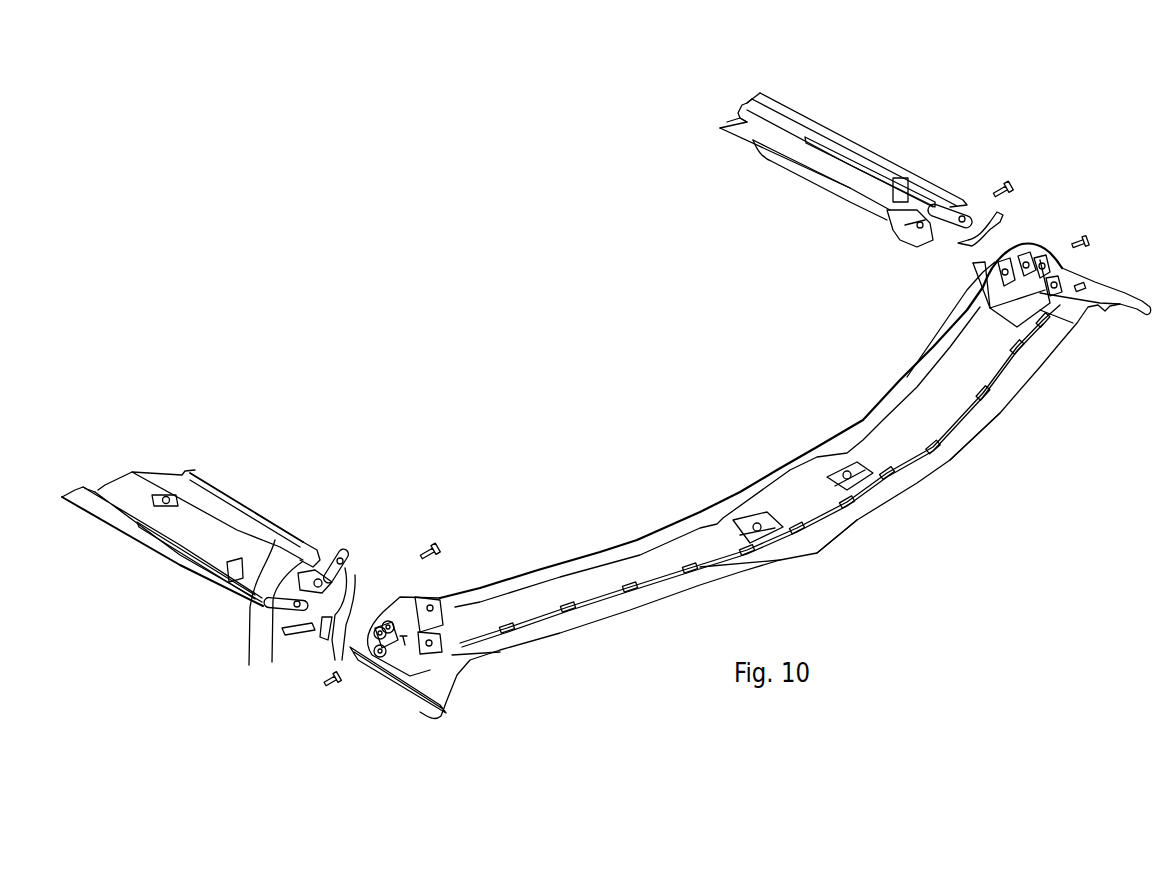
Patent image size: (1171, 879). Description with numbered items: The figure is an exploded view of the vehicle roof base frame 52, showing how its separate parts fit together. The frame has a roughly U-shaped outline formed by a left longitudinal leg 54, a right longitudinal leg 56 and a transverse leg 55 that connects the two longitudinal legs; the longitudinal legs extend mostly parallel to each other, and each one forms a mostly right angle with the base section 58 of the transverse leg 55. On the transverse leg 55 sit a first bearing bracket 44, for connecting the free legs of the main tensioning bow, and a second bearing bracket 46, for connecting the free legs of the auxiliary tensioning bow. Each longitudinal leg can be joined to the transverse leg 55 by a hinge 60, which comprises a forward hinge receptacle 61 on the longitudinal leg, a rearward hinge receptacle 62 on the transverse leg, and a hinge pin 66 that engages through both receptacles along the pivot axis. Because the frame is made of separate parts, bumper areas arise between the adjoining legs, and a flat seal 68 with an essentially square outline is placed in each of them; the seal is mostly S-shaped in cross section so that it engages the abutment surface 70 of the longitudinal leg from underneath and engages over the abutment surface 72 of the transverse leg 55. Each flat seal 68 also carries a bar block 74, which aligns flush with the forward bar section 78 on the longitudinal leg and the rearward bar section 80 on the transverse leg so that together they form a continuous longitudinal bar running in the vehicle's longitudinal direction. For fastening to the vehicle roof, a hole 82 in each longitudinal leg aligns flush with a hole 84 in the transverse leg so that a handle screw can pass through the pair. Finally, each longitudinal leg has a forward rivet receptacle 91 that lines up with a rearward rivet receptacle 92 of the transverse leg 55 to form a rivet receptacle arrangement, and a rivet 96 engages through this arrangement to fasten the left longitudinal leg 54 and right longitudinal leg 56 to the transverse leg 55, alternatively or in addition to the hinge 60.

The first bearing bracket 44 is at (383, 600).
The second bearing bracket 46 is at (450, 655).
The vehicle roof base frame 52 is at (757, 96).
The left longitudinal leg 54 is at (140, 545).
The transverse leg 55 is at (980, 440).
The right longitudinal leg 56 is at (800, 107).
The base section 58 is at (905, 508).
The hinge 60 is at (431, 533).
The forward hinge receptacle 61 is at (343, 555).
The rearward hinge receptacle 62 is at (430, 603).
The hinge pin 66 is at (1005, 185).
The flat seal 68 is at (308, 646).
The abutment surface 70 is at (948, 143).
The abutment surface 72 is at (330, 640).
The bar block 74 is at (370, 600).
The forward bar section 78 is at (175, 555).
The rearward bar section 80 is at (410, 672).
The hole 82 is at (312, 575).
The hole 84 is at (404, 636).
The forward rivet receptacle 91 is at (271, 640).
The rearward rivet receptacle 92 is at (383, 660).
The rivet 96 is at (332, 690).